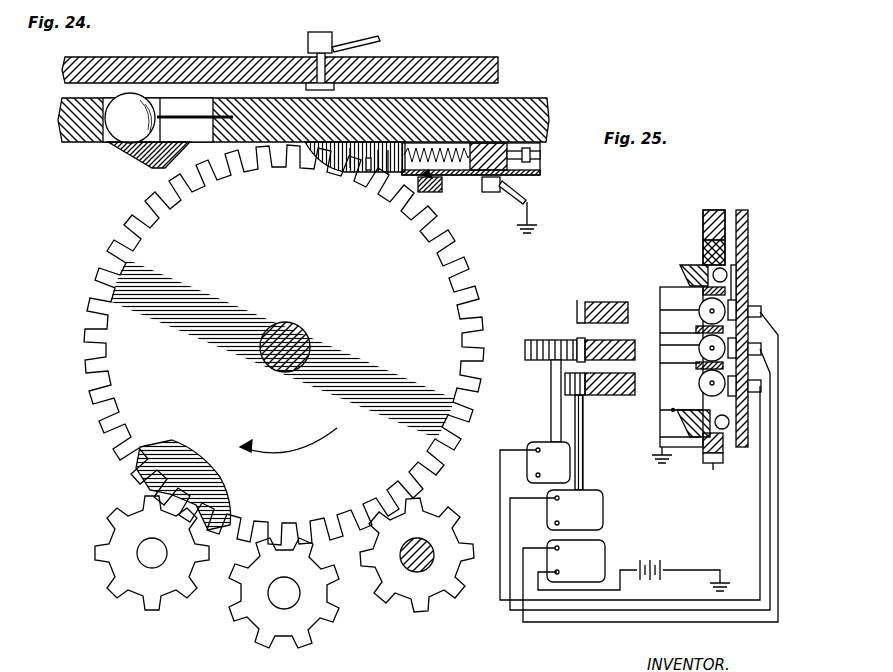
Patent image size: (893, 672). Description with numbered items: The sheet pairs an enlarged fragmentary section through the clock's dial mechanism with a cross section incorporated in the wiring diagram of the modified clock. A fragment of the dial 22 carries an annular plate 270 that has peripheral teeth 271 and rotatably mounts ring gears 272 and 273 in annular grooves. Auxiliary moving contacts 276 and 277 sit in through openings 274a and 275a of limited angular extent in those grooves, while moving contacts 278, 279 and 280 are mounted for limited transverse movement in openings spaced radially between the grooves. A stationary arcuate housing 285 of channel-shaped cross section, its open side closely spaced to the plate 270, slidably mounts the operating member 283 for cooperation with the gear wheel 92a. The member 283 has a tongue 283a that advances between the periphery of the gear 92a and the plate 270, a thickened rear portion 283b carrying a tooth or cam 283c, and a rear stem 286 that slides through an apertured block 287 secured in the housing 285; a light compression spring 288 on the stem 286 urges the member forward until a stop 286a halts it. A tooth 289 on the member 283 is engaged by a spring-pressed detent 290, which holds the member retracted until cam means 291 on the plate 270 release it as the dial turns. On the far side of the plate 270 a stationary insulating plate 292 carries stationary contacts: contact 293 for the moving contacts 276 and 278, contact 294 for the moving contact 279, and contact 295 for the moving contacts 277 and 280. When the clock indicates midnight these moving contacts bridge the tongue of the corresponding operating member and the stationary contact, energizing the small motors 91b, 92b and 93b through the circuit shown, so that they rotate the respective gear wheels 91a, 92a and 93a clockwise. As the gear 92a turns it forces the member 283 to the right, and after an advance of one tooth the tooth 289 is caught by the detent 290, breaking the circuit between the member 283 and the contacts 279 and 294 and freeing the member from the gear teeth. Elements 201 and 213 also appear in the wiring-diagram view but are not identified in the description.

In FIG. 25, the dial 22 is at (713, 210).
In FIG. 25, the gear wheel 91a is at (577, 300).
In FIG. 25, the small motor 91b is at (628, 531).
In FIG. 24, the gear wheel 92a is at (128, 326).
In FIG. 25, the gear wheel 92a is at (578, 340).
In FIG. 25, the small motor 92b is at (538, 448).
In FIG. 24, the gear wheel 93a is at (160, 470).
In FIG. 25, the gear wheel 93a is at (585, 393).
In FIG. 25, the small motor 93b is at (615, 486).
In FIG. 25, the wedge 201 is at (680, 272).
In FIG. 25, the wedge 213 is at (690, 426).
In FIG. 24, the annular plate 270 is at (66, 118).
In FIG. 25, the annular plate 270 is at (706, 250).
In FIG. 25, the peripheral teeth 271 is at (710, 462).
In FIG. 25, the ring gear 272 is at (715, 270).
In FIG. 25, the ring gear 273 is at (700, 437).
In FIG. 25, the through opening 274a is at (708, 235).
In FIG. 25, the through opening 275a is at (705, 445).
In FIG. 25, the auxiliary moving contact 276 is at (712, 262).
In FIG. 25, the auxiliary moving contact 277 is at (716, 465).
In FIG. 25, the moving contact 278 is at (699, 310).
In FIG. 24, the moving contact 279 is at (125, 132).
In FIG. 25, the moving contact 279 is at (700, 348).
In FIG. 25, the moving contact 280 is at (672, 410).
In FIG. 24, the operating member 283 is at (368, 170).
In FIG. 24, the tongue 283a is at (310, 162).
In FIG. 24, the thickened rear portion 283b is at (378, 172).
In FIG. 24, the tooth or cam 283c is at (348, 168).
In FIG. 24, the arcuate housing 285 is at (522, 180).
In FIG. 24, the stem 286 is at (455, 145).
In FIG. 24, the stop 286a is at (530, 152).
In FIG. 24, the apertured block 287 is at (495, 150).
In FIG. 24, the compression spring 288 is at (438, 150).
In FIG. 24, the tooth 289 is at (388, 176).
In FIG. 24, the spring pressed detent 290 is at (444, 185).
In FIG. 24, the cam means 291 is at (138, 160).
In FIG. 25, the cam means 291 is at (698, 328).
In FIG. 24, the stationary insulating plate 292 is at (418, 57).
In FIG. 25, the stationary insulating plate 292 is at (742, 210).
In FIG. 25, the stationary contact 293 is at (740, 275).
In FIG. 24, the stationary contact 294 is at (308, 54).
In FIG. 25, the stationary contact 294 is at (754, 306).
In FIG. 25, the stationary contact 295 is at (724, 430).